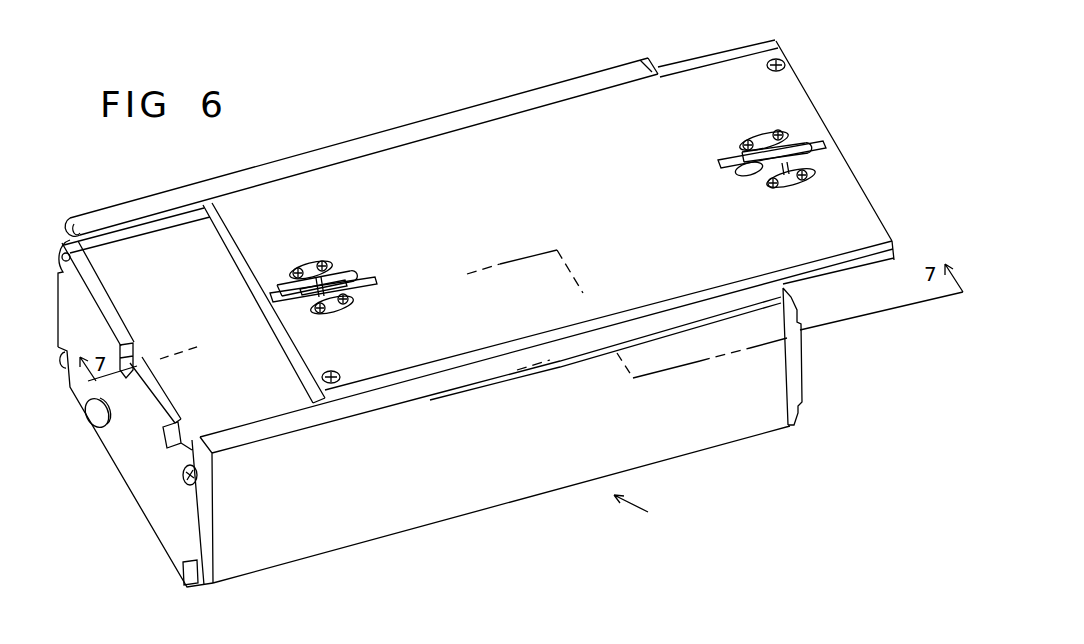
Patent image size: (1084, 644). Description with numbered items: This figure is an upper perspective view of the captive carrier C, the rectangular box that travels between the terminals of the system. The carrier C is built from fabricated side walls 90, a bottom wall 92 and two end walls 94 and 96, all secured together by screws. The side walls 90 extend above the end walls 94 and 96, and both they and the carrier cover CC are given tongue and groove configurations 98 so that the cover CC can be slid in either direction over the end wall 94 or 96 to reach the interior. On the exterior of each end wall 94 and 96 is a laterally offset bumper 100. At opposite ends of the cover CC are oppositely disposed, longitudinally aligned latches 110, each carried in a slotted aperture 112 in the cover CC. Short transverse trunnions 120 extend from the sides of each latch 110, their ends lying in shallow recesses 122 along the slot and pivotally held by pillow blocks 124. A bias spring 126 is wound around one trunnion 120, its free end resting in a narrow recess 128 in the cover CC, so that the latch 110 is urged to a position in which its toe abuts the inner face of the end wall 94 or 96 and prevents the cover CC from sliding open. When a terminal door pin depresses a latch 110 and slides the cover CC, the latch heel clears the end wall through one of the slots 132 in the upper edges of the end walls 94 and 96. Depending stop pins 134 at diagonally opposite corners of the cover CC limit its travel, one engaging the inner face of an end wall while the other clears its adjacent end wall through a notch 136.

The side walls 90 is at (139, 250).
The bottom wall 92 is at (283, 372).
The end wall 94 is at (147, 510).
The end wall 96 is at (803, 392).
The tongue and groove configurations 98 is at (717, 52).
The bumper 100 is at (93, 425).
The latch 110 is at (297, 288).
The slotted aperture 112 is at (350, 272).
The trunnions 120 is at (318, 262).
The recesses 122 is at (326, 262).
The pillow blocks 124 is at (298, 269).
The bias spring 126 is at (320, 308).
The narrow recess 128 is at (373, 285).
The slots 132 is at (129, 343).
The stop pins 134 is at (363, 357).
The notches 136 is at (180, 428).
The carrier cover CC is at (855, 181).
The carrier C is at (641, 513).